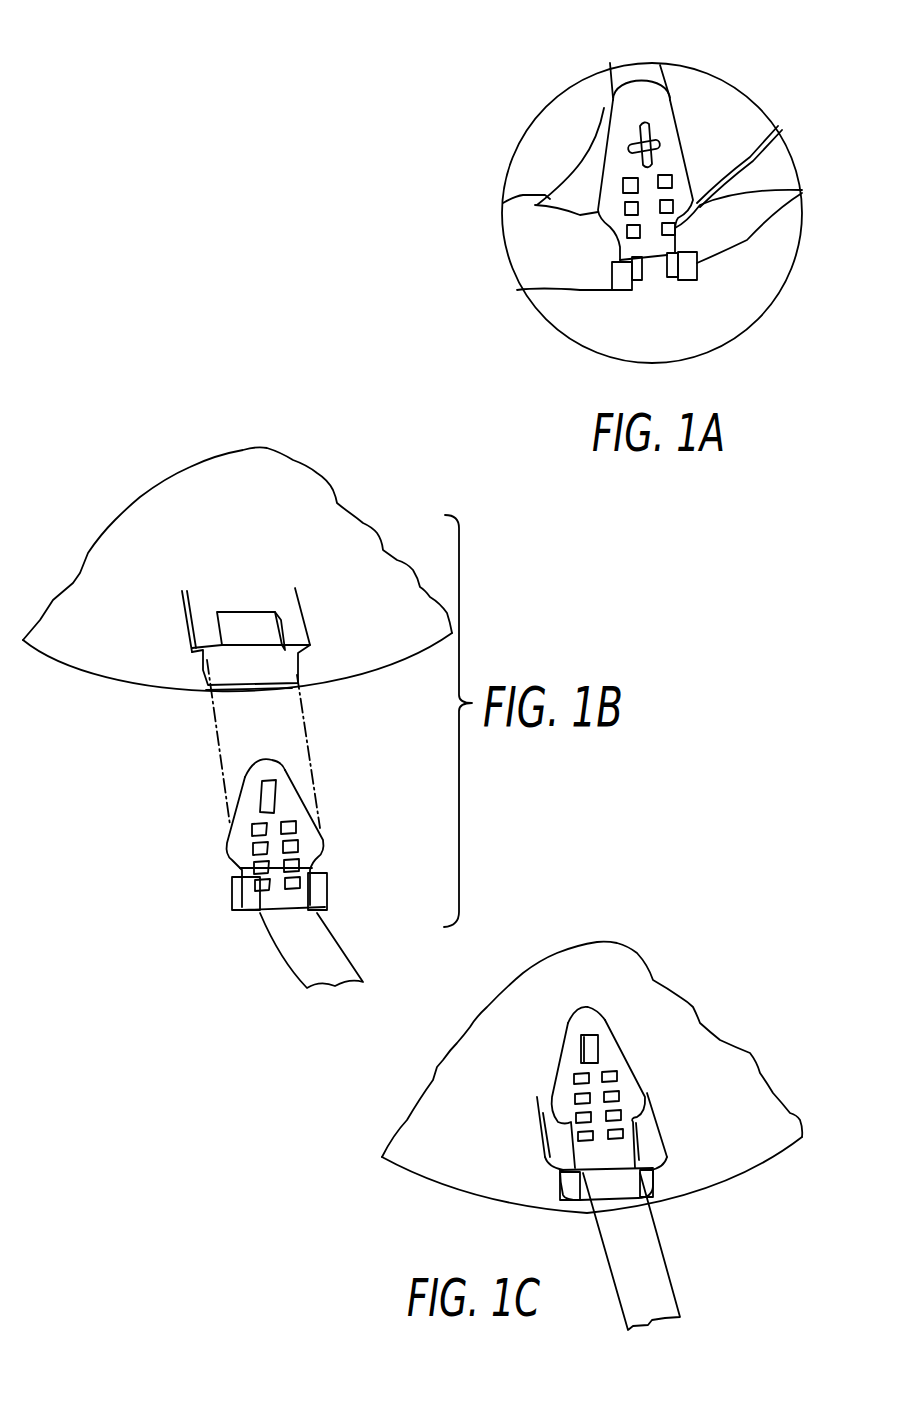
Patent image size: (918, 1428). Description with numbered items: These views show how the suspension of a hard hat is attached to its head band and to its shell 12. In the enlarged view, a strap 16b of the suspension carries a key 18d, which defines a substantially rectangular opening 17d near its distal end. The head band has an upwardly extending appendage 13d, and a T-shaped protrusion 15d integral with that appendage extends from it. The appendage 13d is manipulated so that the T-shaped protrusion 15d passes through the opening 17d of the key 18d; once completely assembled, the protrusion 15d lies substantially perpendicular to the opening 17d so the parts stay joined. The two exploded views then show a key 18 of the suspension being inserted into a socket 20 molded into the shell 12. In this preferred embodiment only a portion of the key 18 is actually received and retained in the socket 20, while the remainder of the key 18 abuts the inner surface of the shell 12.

In FIG. 1B, the shell 12 is at (393, 673).
In FIG. 1C, the shell 12 is at (727, 1175).
In FIG. 1A, the appendage 13d is at (576, 178).
In FIG. 1A, the T-shaped protrusion 15d is at (660, 146).
In FIG. 1A, the strap 16b is at (647, 72).
In FIG. 1A, the opening 17d is at (645, 124).
In FIG. 1B, the key 18 is at (317, 850).
In FIG. 1C, the key 18 is at (615, 1053).
In FIG. 1A, the key 18d is at (623, 288).
In FIG. 1B, the socket 20 is at (197, 622).
In FIG. 1C, the socket 20 is at (541, 1138).